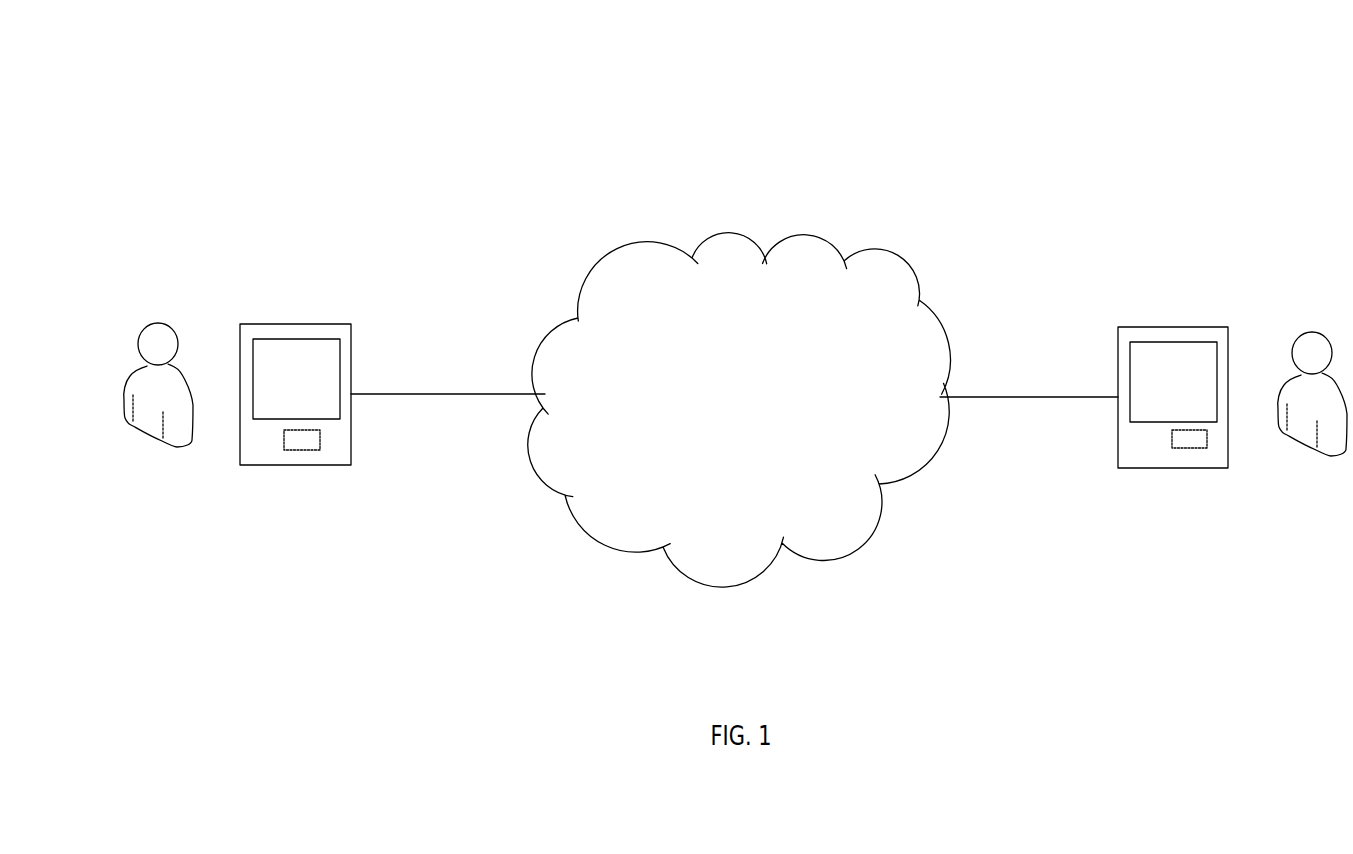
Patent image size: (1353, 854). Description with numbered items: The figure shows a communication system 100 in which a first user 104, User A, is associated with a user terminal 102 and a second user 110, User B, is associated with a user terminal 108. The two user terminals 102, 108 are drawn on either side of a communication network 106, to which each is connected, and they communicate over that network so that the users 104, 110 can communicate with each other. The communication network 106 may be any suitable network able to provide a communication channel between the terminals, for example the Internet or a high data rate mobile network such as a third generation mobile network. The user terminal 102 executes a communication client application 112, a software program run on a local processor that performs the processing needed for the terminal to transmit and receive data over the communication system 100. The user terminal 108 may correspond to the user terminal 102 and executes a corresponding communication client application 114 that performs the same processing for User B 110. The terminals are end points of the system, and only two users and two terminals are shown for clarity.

The communication system 100 is at (249, 124).
The user terminal 102 is at (290, 465).
The first user 104 is at (158, 323).
The communication network 106 is at (860, 248).
The user terminal 108 is at (1168, 468).
The second user 110 is at (1312, 330).
The communication client application 112 is at (320, 448).
The communication client application 114 is at (1205, 448).